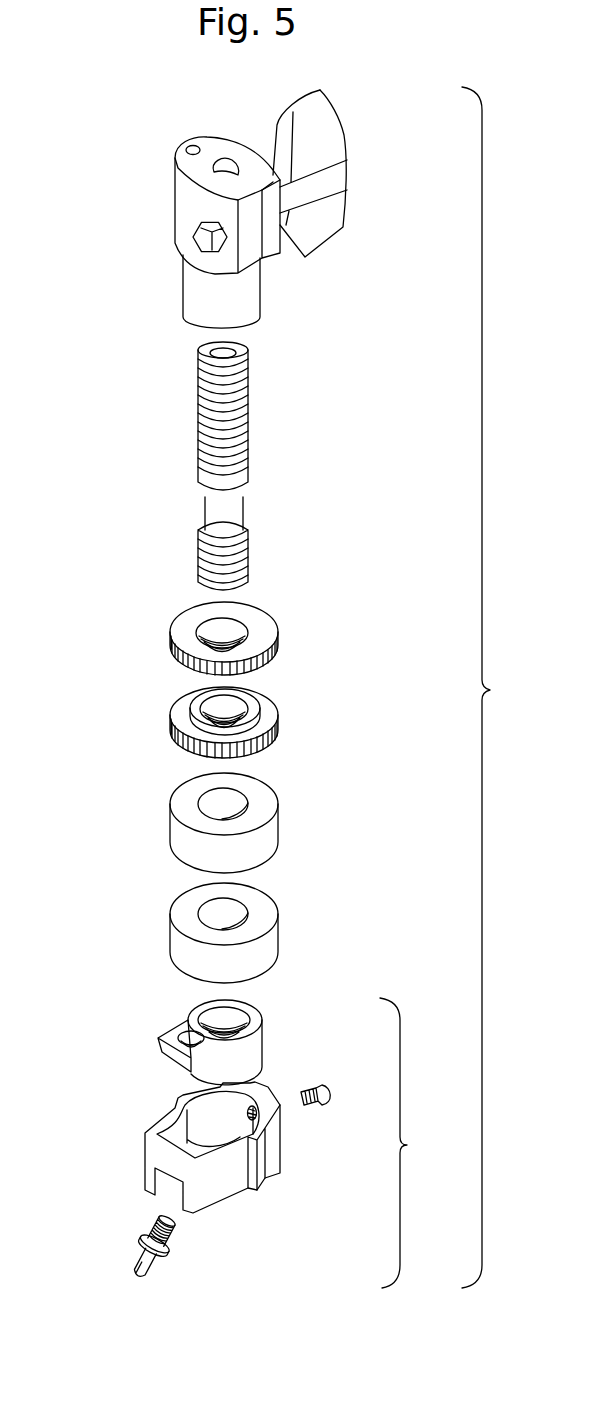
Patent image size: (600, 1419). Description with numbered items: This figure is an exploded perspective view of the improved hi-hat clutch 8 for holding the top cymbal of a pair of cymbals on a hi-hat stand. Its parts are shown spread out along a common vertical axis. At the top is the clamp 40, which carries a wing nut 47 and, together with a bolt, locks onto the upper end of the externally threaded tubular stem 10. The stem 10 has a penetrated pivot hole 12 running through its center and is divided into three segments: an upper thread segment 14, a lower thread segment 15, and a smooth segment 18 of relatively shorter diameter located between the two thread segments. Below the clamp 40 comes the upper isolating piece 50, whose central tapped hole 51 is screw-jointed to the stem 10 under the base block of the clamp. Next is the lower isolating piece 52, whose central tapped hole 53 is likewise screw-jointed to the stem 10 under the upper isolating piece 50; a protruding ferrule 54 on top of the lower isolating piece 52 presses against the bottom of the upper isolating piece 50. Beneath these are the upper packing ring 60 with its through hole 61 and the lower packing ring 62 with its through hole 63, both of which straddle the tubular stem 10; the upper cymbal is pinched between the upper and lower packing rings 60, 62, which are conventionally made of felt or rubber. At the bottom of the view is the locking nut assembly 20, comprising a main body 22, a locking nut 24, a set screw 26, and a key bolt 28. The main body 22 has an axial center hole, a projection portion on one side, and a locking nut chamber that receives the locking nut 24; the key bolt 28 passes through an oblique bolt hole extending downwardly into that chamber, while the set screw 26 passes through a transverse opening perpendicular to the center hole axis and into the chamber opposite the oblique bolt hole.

The hi-hat clutch 8 is at (482, 687).
The clamp 40 is at (172, 198).
The wing nut 47 is at (337, 142).
The externally threaded tubular stem 10 is at (187, 457).
The penetrated pivot hole 12 is at (218, 353).
The upper thread segment 14 is at (202, 463).
The smooth segment 18 is at (212, 510).
The lower thread segment 15 is at (200, 565).
The upper isolating piece 50 is at (219, 627).
The tapped hole 51 is at (248, 635).
The lower isolating piece 52 is at (228, 708).
The tapped hole 53 is at (248, 712).
The protruding ferrule 54 is at (243, 732).
The upper packing ring 60 is at (225, 823).
The through hole 61 is at (247, 798).
The lower packing ring 62 is at (225, 933).
The through hole 63 is at (247, 908).
The locking nut assembly 20 is at (280, 1143).
The locking nut 24 is at (262, 1035).
The main body 22 is at (278, 1153).
The set screw 26 is at (330, 1092).
The key bolt 28 is at (173, 1243).